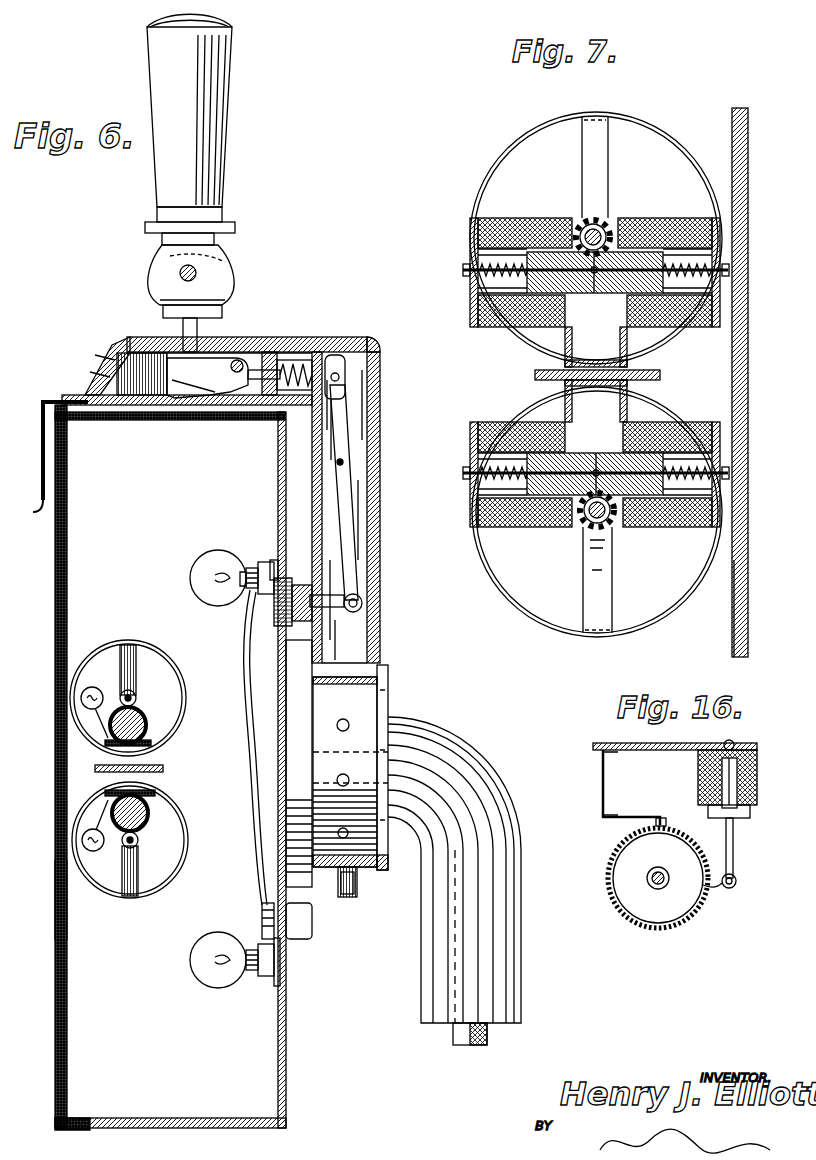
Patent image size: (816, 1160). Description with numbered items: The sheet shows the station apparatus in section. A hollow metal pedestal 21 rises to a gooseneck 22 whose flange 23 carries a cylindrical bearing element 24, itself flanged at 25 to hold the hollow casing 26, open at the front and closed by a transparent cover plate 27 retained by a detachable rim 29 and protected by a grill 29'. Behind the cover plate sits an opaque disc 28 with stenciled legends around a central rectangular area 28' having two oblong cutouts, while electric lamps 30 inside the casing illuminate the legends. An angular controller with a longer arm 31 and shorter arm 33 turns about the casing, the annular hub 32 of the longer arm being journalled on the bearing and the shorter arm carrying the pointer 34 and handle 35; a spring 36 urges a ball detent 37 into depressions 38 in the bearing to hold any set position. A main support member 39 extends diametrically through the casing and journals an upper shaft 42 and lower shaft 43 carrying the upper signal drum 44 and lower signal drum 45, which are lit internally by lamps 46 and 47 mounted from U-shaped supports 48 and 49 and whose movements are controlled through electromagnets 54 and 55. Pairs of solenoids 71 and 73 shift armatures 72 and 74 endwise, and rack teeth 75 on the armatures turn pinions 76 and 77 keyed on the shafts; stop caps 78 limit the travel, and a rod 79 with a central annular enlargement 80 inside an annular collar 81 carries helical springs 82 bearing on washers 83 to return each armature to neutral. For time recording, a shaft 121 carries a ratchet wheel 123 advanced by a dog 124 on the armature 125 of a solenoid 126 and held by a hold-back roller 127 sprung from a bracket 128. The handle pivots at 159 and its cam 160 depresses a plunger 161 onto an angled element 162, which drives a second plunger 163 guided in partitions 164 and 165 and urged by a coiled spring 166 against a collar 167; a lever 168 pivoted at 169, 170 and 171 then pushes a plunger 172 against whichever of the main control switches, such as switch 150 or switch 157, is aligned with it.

In FIG. 6, the pedestal 21 is at (526, 993).
In FIG. 6, the gooseneck 22 is at (456, 736).
In FIG. 6, the flange 23 is at (386, 680).
In FIG. 6, the bearing element 24 is at (365, 772).
In FIG. 6, the flange 25 is at (293, 722).
In FIG. 6, the casing 26 is at (287, 1020).
In FIG. 6, the cover plate 27 is at (55, 582).
In FIG. 7, the cover plate 27 is at (748, 366).
In FIG. 6, the opaque disc 28 is at (170, 474).
In FIG. 7, the opaque disc 28 is at (715, 608).
In FIG. 6, the central rectangular area 28' is at (83, 900).
In FIG. 6, the retaining rim 29 is at (157, 1132).
In FIG. 6, the grill 29' is at (34, 900).
In FIG. 6, the electric lamps 30 is at (214, 556).
In FIG. 6, the longer arm 31 is at (379, 495).
In FIG. 6, the annular hub 32 is at (388, 860).
In FIG. 6, the shorter arm 33 is at (130, 343).
In FIG. 6, the index or pointer 34 is at (37, 504).
In FIG. 6, the handle 35 is at (232, 128).
In FIG. 6, the spring 36 is at (347, 898).
In FIG. 6, the detent 37 is at (357, 878).
In FIG. 6, the depressions 38 is at (350, 727).
In FIG. 6, the main support member 39 is at (163, 769).
In FIG. 7, the main support member 39 is at (535, 374).
In FIG. 16, the main support member 39 is at (660, 750).
In FIG. 6, the upper shaft 42 is at (136, 698).
In FIG. 7, the upper shaft 42 is at (606, 228).
In FIG. 6, the lower shaft 43 is at (138, 842).
In FIG. 7, the lower shaft 43 is at (590, 522).
In FIG. 6, the upper signal drum 44 is at (128, 640).
In FIG. 7, the upper signal drum 44 is at (522, 132).
In FIG. 6, the lower signal drum 45 is at (150, 893).
In FIG. 7, the lower signal drum 45 is at (518, 605).
In FIG. 6, the electric lamp 46 is at (92, 687).
In FIG. 6, the electric lamp 47 is at (93, 851).
In FIG. 6, the U-shaped support 48 is at (151, 744).
In FIG. 6, the U-shaped support 49 is at (155, 794).
In FIG. 6, the electromagnet 54 is at (146, 722).
In FIG. 6, the electromagnet 55 is at (146, 818).
In FIG. 7, the solenoids 71 is at (520, 218).
In FIG. 7, the armature 72 is at (660, 318).
In FIG. 7, the solenoids 73 is at (520, 528).
In FIG. 7, the armature 74 is at (650, 436).
In FIG. 7, the rack teeth 75 is at (640, 240).
In FIG. 7, the pinion 76 is at (580, 226).
In FIG. 7, the pinion 77 is at (608, 520).
In FIG. 7, the stop caps 78 is at (471, 245).
In FIG. 7, the rod 79 is at (463, 270).
In FIG. 7, the annular enlargement 80 is at (594, 285).
In FIG. 7, the annular collar 81 is at (602, 290).
In FIG. 7, the helical springs 82 is at (490, 276).
In FIG. 7, the washers 83 is at (562, 318).
In FIG. 16, the shaft 121 is at (658, 889).
In FIG. 16, the ratchet wheel 123 is at (613, 897).
In FIG. 16, the dog 124 is at (728, 889).
In FIG. 16, the armature 125 is at (750, 812).
In FIG. 16, the solenoid 126 is at (757, 780).
In FIG. 16, the hold-back roller 127 is at (664, 818).
In FIG. 16, the bracket 128 is at (602, 790).
In FIG. 6, the main control switch 150 is at (289, 580).
In FIG. 6, the main control switch 157 is at (262, 918).
In FIG. 6, the pivot 159 is at (198, 275).
In FIG. 6, the cam 160 is at (156, 280).
In FIG. 6, the plunger 161 is at (198, 326).
In FIG. 6, the angled element 162 is at (222, 372).
In FIG. 6, the second plunger 163 is at (302, 372).
In FIG. 6, the partition 164 is at (272, 368).
In FIG. 6, the partition 165 is at (338, 358).
In FIG. 6, the coiled spring 166 is at (300, 360).
In FIG. 6, the collar 167 is at (290, 400).
In FIG. 6, the lever 168 is at (346, 430).
In FIG. 6, the pivot 169 is at (345, 378).
In FIG. 6, the pivot 170 is at (344, 462).
In FIG. 6, the pivot 171 is at (362, 604).
In FIG. 6, the plunger 172 is at (335, 608).